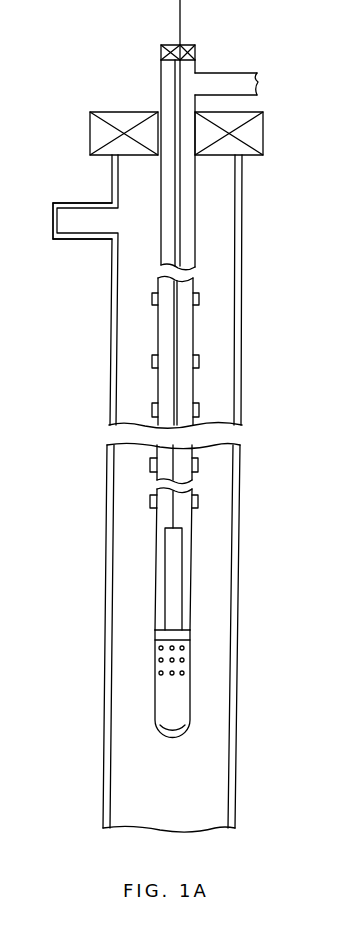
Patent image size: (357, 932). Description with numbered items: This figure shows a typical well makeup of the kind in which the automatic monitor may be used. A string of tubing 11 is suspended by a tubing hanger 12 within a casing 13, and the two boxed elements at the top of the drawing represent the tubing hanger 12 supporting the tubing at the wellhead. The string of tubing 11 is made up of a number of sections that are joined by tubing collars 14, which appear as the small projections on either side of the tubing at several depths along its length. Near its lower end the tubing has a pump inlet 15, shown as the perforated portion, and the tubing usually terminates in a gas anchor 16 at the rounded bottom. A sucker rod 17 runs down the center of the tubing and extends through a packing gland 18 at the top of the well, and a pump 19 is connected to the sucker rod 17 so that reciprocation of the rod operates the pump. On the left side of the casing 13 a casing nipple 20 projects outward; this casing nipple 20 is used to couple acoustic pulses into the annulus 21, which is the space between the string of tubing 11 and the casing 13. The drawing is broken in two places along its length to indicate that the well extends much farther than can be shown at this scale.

The string of tubing 11 is at (185, 235).
The tubing hanger 12 is at (263, 137).
The casing 13 is at (242, 265).
The tubing collars 14 is at (199, 297).
The pump inlet 15 is at (184, 673).
The gas anchor 16 is at (181, 740).
The sucker rod 17 is at (178, 203).
The packing gland 18 is at (190, 45).
The pump 19 is at (185, 553).
The casing nipple 20 is at (67, 240).
The annulus 21 is at (123, 295).